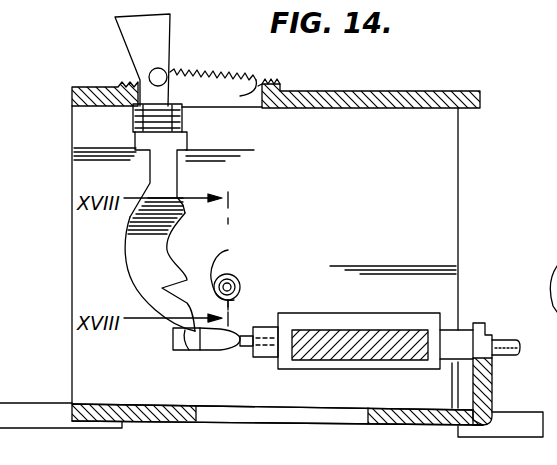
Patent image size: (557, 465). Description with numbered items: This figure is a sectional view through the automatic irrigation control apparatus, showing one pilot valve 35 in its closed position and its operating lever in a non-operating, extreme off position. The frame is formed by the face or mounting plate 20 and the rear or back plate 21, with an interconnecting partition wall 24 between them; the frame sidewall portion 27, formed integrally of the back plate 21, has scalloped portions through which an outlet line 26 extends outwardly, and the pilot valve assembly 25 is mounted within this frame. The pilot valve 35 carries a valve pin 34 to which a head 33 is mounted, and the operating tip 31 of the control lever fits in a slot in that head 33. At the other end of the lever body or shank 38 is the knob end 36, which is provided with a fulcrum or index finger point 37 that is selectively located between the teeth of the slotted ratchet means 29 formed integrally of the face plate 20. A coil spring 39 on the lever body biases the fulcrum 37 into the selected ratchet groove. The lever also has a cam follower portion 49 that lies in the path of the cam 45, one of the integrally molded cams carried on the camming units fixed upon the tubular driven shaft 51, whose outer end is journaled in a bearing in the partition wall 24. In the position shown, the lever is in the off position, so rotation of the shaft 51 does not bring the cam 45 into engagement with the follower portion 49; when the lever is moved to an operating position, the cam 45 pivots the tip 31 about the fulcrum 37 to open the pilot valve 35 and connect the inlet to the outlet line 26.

The face plate 20 is at (384, 101).
The back plate 21 is at (397, 420).
The partition wall 24 is at (458, 134).
The cylinder assembly 25 is at (436, 310).
The outlet line 26 is at (505, 342).
The frame sidewall portion 27 is at (484, 396).
The slotted ratchet means 29 is at (260, 78).
The operating tip 31 is at (188, 355).
The head 33 is at (222, 340).
The valve pin 34 is at (246, 352).
The pilot valve 35 is at (350, 313).
The knob end 36 is at (127, 35).
The fulcrum 37 is at (188, 72).
The lever body 38 is at (166, 176).
The coil spring 39 is at (183, 126).
The cam 45 is at (230, 262).
The cam follower portion 49 is at (174, 252).
The driven shaft 51 is at (240, 282).